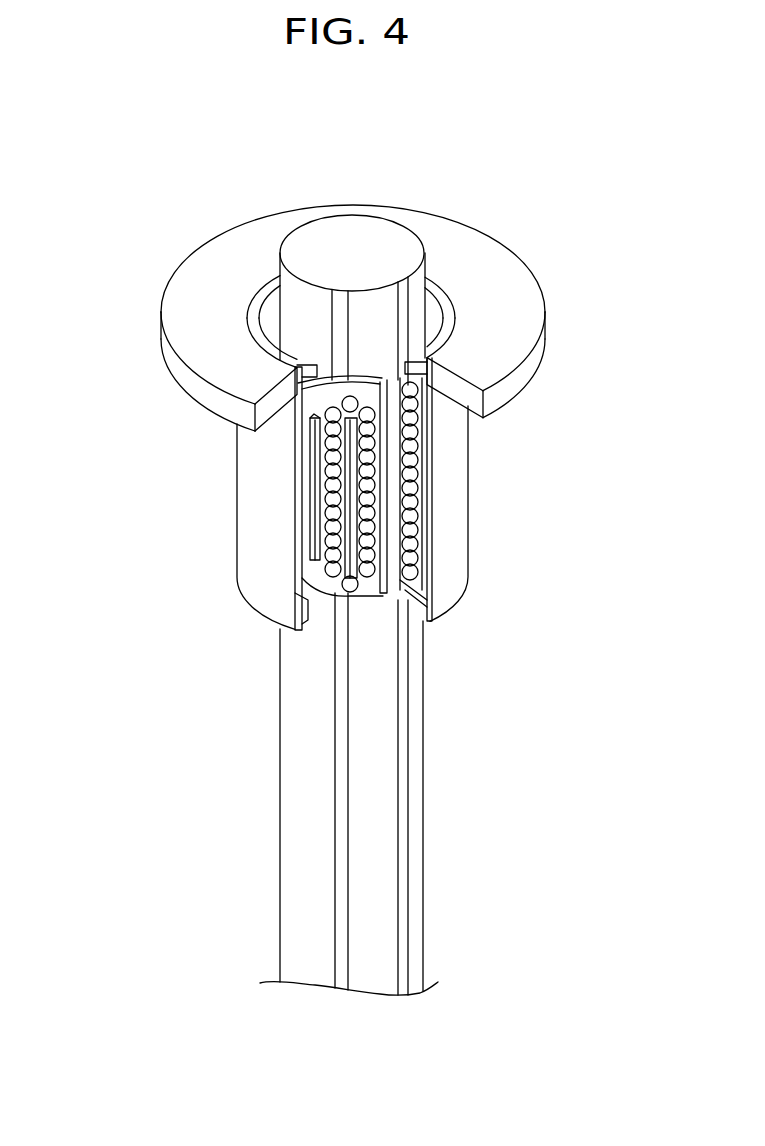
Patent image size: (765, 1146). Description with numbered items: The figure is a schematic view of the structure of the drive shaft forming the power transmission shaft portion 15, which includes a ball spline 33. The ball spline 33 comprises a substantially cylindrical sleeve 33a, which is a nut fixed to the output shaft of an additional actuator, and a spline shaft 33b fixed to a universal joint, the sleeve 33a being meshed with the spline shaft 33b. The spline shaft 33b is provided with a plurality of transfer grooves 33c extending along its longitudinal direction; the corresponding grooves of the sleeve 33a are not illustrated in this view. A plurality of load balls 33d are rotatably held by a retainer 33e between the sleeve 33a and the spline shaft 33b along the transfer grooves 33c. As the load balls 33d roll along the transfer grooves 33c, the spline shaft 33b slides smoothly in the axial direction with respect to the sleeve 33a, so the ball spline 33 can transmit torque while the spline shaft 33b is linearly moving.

The power transmission shaft portion 15 is at (115, 197).
The ball spline 33 is at (360, 532).
The sleeve 33a is at (237, 465).
The spline shaft 33b is at (280, 750).
The transfer grooves 33c is at (338, 822).
The load balls 33d is at (410, 495).
The retainer 33e is at (308, 567).